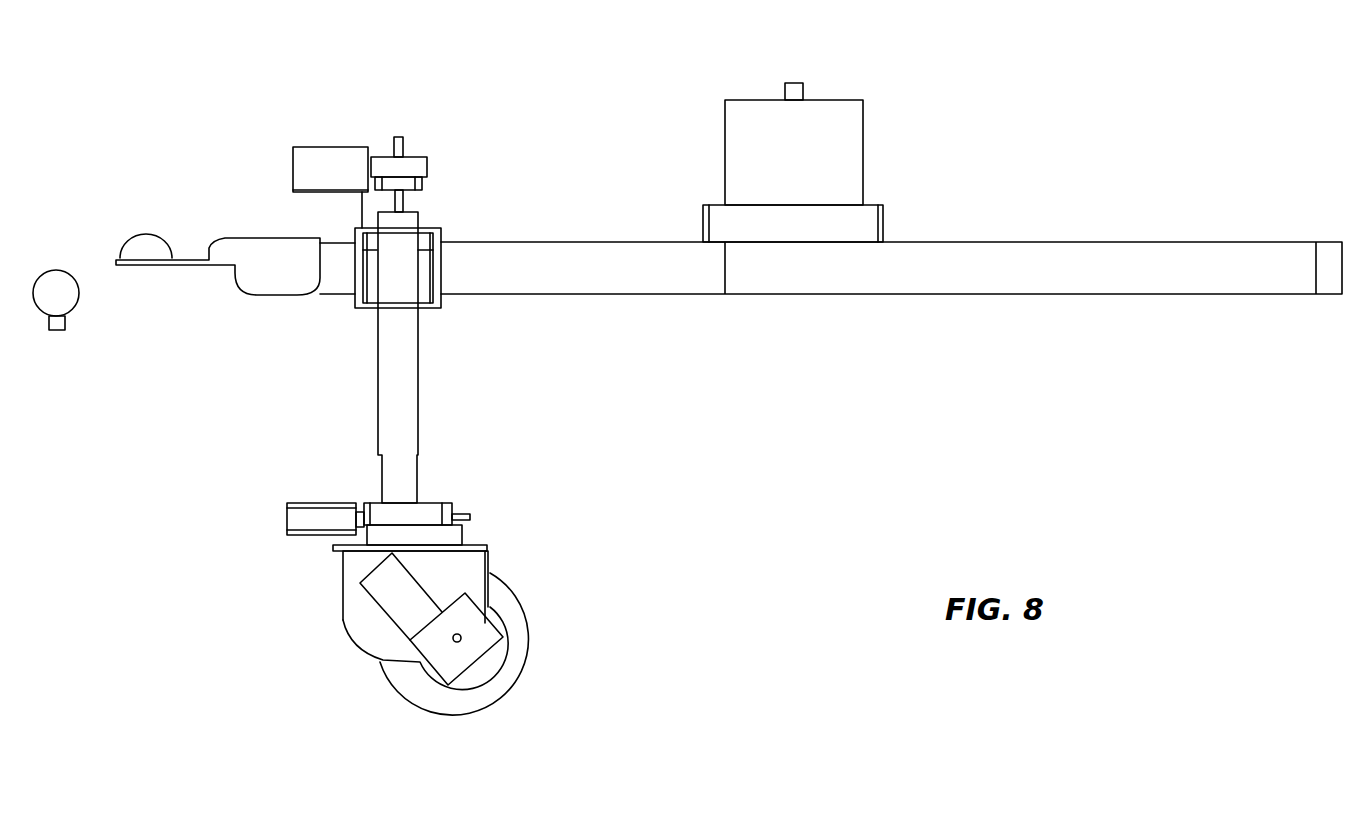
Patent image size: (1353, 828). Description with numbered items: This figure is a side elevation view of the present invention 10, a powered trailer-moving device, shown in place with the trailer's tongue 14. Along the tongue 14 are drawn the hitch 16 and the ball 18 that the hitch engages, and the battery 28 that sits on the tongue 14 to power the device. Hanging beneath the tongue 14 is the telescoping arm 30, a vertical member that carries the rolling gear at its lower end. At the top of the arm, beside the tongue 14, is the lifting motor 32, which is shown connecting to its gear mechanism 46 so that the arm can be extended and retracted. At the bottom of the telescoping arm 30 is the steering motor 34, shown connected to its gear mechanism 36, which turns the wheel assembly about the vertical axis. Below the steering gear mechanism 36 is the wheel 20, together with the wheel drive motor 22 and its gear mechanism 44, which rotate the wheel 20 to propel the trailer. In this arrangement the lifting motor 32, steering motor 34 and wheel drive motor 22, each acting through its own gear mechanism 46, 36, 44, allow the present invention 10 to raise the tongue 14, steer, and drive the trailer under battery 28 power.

The present invention 10 is at (572, 493).
The tongue 14 is at (579, 253).
The hitch 16 is at (138, 237).
The ball 18 is at (63, 273).
The wheel 20 is at (527, 627).
The wheel drive motor 22 is at (345, 630).
The battery 28 is at (745, 110).
The telescoping arm 30 is at (412, 410).
The lifting motor 32 is at (323, 150).
The steering motor 34 is at (320, 515).
The gear mechanism 36 is at (429, 505).
The gear mechanism 44 is at (483, 648).
The gear mechanism 46 is at (417, 158).